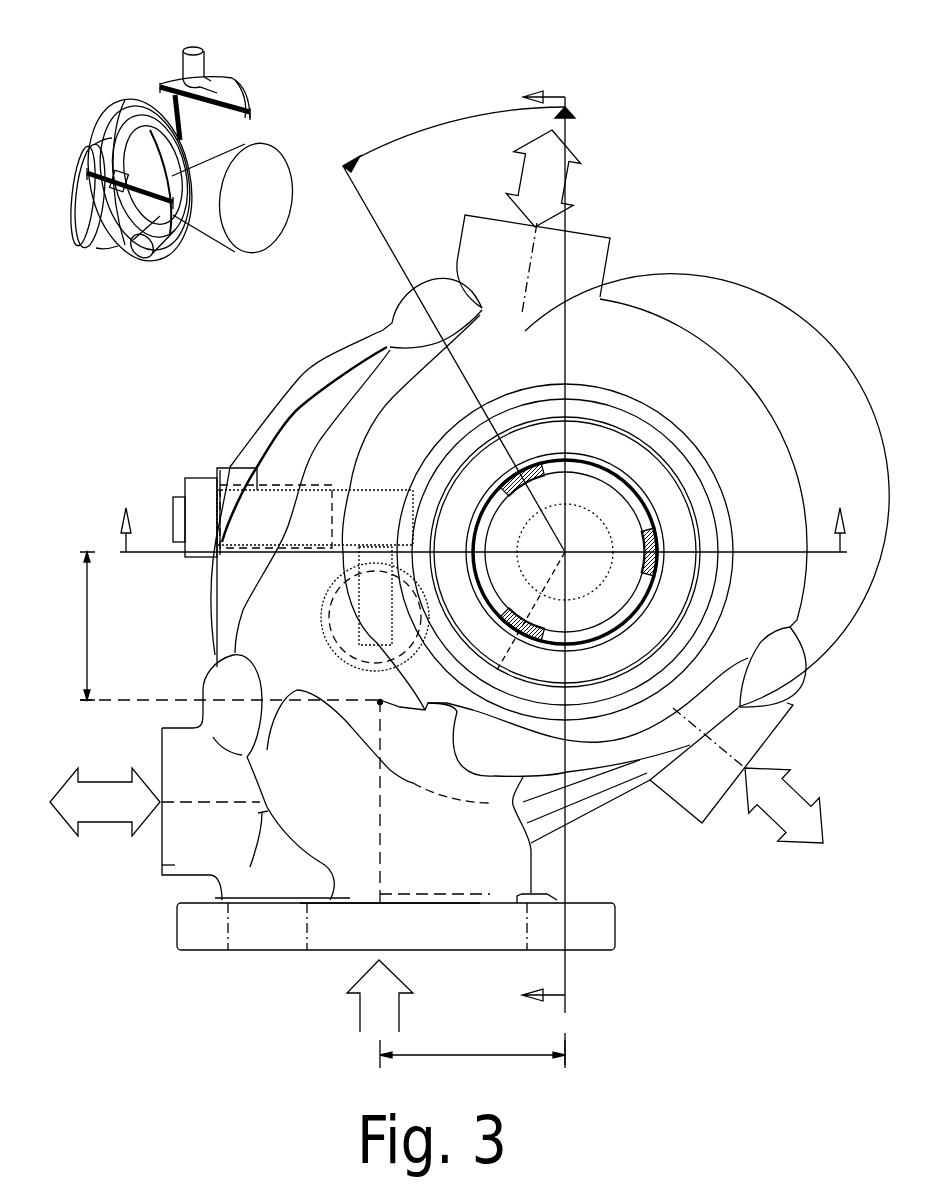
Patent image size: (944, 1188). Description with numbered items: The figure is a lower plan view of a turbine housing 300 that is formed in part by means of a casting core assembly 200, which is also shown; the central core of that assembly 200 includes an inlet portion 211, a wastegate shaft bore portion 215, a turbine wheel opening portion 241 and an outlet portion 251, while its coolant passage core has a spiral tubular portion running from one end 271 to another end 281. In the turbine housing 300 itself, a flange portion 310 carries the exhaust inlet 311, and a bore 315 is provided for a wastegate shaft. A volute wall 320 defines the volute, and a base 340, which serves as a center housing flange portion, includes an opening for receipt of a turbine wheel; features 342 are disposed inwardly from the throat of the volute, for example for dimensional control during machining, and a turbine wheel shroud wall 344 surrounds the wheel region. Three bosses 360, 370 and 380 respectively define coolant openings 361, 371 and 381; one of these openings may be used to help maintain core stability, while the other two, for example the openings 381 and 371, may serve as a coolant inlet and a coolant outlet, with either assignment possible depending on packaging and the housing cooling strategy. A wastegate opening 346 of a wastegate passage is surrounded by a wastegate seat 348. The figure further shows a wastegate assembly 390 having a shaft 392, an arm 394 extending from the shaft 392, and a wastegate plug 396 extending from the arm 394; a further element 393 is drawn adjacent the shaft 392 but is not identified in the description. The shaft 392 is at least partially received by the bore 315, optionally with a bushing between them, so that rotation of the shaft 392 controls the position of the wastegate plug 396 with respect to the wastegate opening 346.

The assembly 200 is at (143, 35).
The inlet portion 211 is at (240, 95).
The wastegate shaft bore portion 215 is at (158, 92).
The turbine wheel opening portion 241 is at (72, 150).
The outlet portion 251 is at (250, 248).
The end 271 is at (143, 258).
The end 281 is at (196, 50).
The turbine housing 300 is at (705, 284).
The flange portion 310 is at (200, 953).
The exhaust inlet 311 is at (437, 975).
The bore 315 is at (233, 482).
The volute wall 320 is at (737, 370).
The base 340 is at (672, 448).
The features 342 is at (661, 545).
The turbine wheel shroud wall 344 is at (658, 510).
The wastegate opening 346 is at (347, 650).
The wastegate seat 348 is at (373, 670).
The boss 360 is at (715, 815).
The coolant opening 361 is at (782, 752).
The boss 370 is at (580, 235).
The coolant opening 371 is at (490, 210).
The boss 380 is at (160, 748).
The coolant opening 381 is at (157, 838).
The wastegate assembly 390 is at (160, 468).
The shaft 392 is at (343, 487).
The mounting envelope 393 is at (327, 550).
The arm 394 is at (358, 584).
The wastegate plug 396 is at (328, 617).